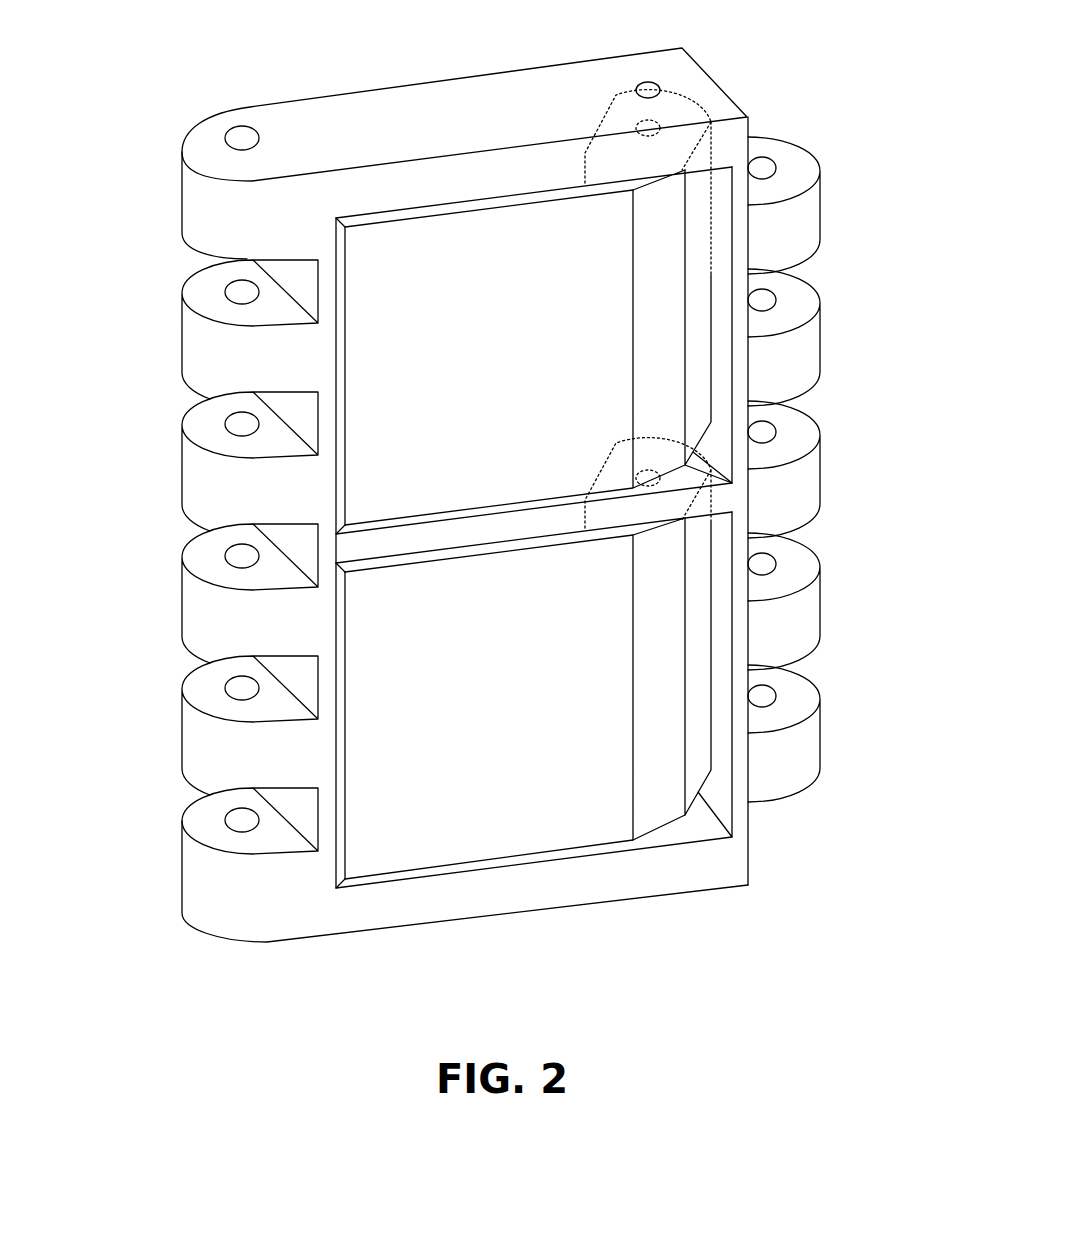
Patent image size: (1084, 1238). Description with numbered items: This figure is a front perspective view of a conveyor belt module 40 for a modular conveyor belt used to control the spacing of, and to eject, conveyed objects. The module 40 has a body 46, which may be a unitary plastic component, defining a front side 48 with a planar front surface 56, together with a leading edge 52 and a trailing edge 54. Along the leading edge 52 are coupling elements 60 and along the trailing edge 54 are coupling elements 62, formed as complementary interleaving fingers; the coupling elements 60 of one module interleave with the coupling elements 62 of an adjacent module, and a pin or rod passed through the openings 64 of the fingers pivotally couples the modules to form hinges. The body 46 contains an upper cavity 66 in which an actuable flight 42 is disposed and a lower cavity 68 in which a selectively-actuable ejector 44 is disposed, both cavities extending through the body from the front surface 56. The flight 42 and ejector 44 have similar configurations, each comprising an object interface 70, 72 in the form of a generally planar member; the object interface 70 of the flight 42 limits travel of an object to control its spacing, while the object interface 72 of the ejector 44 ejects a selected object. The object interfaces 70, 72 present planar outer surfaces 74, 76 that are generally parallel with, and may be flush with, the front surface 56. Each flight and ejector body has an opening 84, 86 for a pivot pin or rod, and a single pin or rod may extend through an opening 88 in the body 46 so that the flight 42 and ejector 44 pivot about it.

The conveyor belt module 40 is at (118, 51).
The flight 42 is at (513, 502).
The ejector 44 is at (505, 723).
The body 46 is at (452, 88).
The front side 48 is at (465, 903).
The leading edge 52 is at (822, 469).
The trailing edge 54 is at (212, 609).
The front surface 56 is at (518, 897).
The coupling elements 60 is at (812, 477).
The coupling elements 62 is at (188, 594).
The openings 64 is at (238, 292).
The upper cavity 66 is at (534, 515).
The lower cavity 68 is at (672, 835).
The object interface 70 is at (483, 203).
The object interface 72 is at (485, 550).
The outer surface 74 is at (475, 371).
The outer surface 76 is at (475, 720).
The opening 84 is at (641, 124).
The opening 86 is at (645, 476).
The opening 88 is at (644, 83).